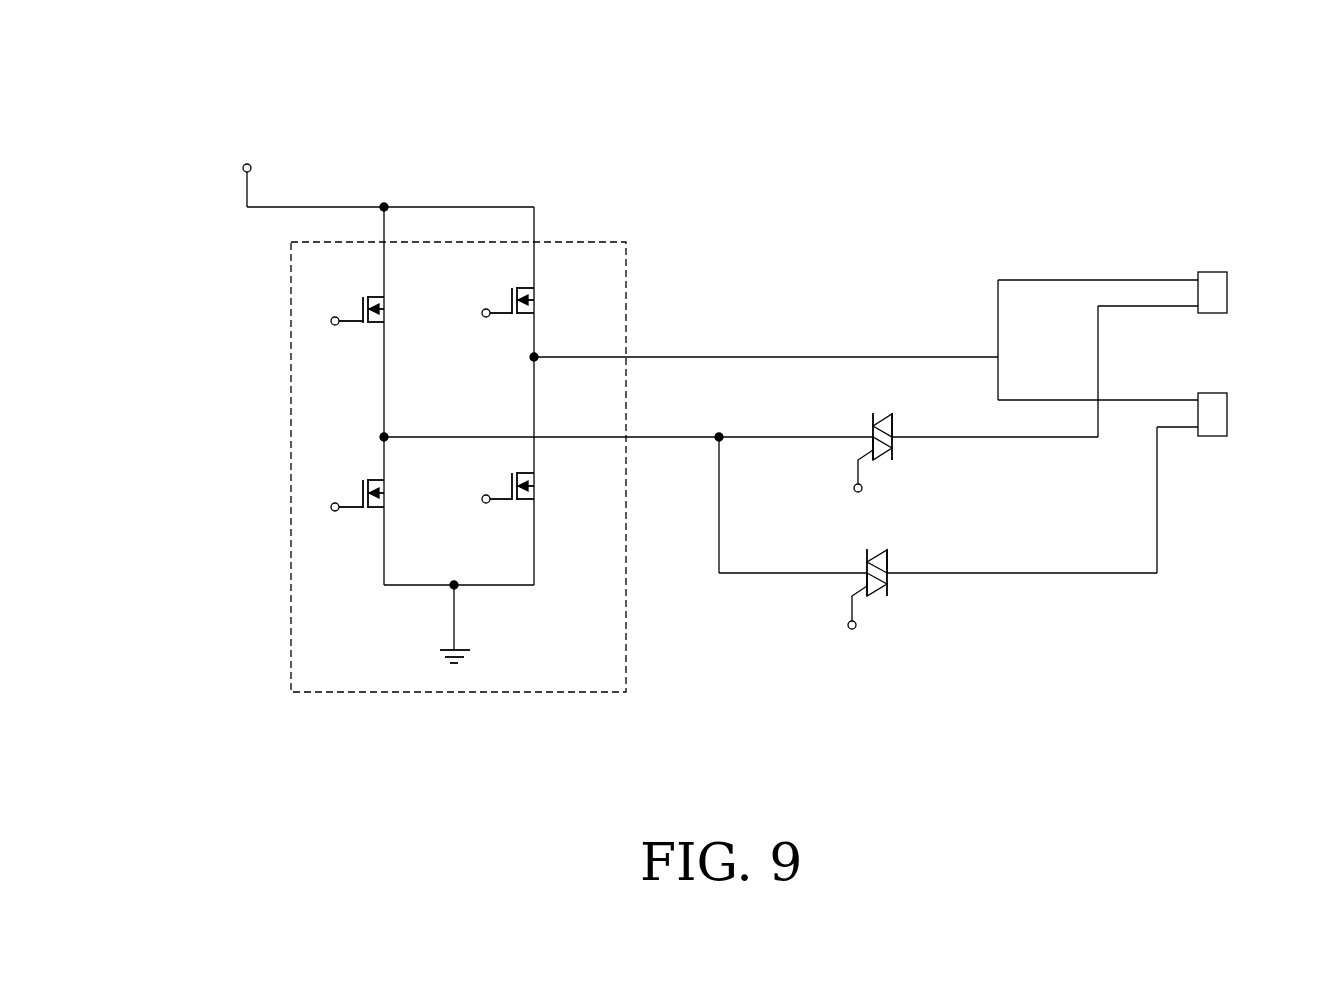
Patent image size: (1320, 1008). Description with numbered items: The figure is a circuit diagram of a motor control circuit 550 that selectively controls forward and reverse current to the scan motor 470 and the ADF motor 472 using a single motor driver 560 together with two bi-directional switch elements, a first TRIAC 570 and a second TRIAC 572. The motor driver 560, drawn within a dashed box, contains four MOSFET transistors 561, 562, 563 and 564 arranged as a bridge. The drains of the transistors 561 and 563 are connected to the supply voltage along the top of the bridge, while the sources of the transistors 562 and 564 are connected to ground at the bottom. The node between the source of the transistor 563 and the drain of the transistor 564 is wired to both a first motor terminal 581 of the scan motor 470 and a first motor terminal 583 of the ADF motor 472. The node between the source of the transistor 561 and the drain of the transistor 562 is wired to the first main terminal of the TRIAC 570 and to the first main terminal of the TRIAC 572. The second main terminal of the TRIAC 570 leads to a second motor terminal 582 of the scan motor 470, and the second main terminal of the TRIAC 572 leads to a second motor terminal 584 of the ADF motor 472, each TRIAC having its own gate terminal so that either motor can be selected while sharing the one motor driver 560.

The motor control circuit 550 is at (270, 61).
The motor driver 560 is at (291, 443).
The MOSFET transistor 561 is at (362, 289).
The MOSFET transistor 562 is at (368, 474).
The MOSFET transistor 563 is at (520, 286).
The MOSFET transistor 564 is at (518, 470).
The first TRIAC 570 is at (897, 453).
The second TRIAC 572 is at (893, 590).
The first motor terminal 581 is at (1168, 280).
The second motor terminal 582 is at (1183, 306).
The first motor terminal 583 is at (1170, 400).
The second motor terminal 584 is at (1170, 427).
The scan motor 470 is at (1211, 272).
The ADF motor 472 is at (1220, 393).